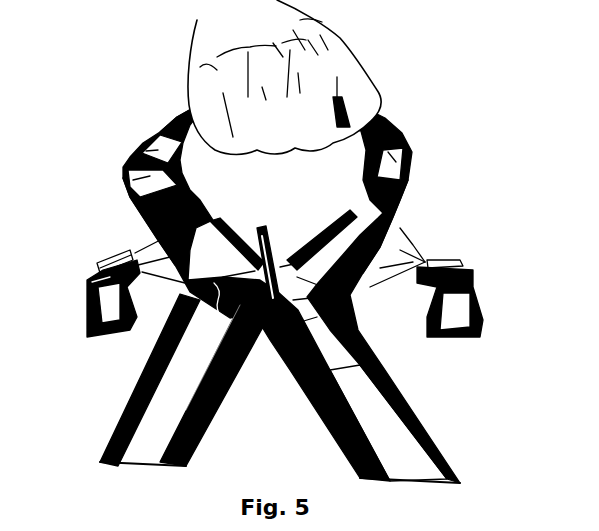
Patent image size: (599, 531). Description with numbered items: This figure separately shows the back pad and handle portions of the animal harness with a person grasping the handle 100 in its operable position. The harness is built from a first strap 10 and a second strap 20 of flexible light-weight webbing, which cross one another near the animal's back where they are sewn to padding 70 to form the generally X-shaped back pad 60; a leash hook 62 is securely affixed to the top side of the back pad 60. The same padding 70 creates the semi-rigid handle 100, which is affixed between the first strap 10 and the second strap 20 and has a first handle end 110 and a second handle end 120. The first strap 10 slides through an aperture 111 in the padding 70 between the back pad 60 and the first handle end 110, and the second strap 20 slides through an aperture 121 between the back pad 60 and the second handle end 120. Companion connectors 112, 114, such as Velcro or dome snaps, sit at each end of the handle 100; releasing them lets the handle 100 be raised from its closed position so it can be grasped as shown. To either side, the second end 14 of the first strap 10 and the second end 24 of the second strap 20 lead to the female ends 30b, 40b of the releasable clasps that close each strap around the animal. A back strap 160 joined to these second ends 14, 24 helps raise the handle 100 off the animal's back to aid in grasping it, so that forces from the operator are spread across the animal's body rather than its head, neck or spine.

The first strap 10 is at (150, 400).
The second strap 20 is at (400, 412).
The second end 14 is at (420, 258).
The second end 24 is at (108, 258).
The female end 30b is at (473, 340).
The female end 40b is at (95, 335).
The back pad 60 is at (350, 315).
The leash hook 62 is at (267, 233).
The padding 70 is at (233, 383).
The handle 100 is at (188, 108).
The first handle end 110 is at (362, 188).
The aperture 111 is at (400, 218).
The companion connector 112 is at (397, 125).
The companion connector 114 is at (127, 143).
The second handle end 120 is at (200, 199).
The aperture 121 is at (140, 223).
The back strap 160 is at (153, 292).